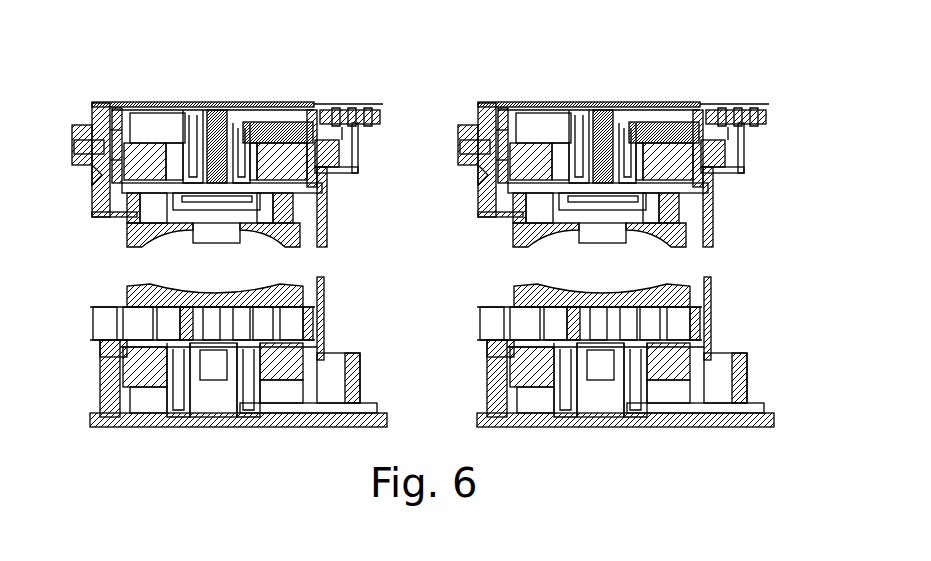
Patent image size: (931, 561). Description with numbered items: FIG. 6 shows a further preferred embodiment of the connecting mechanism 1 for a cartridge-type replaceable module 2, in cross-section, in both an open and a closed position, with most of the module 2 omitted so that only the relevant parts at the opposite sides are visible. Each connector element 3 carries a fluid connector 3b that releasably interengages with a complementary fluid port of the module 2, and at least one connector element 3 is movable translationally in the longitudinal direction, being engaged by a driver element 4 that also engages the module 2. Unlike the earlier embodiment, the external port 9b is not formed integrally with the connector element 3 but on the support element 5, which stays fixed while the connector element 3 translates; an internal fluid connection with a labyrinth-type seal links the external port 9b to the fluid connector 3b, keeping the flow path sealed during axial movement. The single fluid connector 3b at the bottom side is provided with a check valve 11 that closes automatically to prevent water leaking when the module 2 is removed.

The connecting mechanism 1 is at (330, 187).
The module 2 is at (303, 240).
The connector element 3 is at (280, 140).
The fluid connector 3b is at (217, 110).
The driver element 4 is at (123, 187).
The support element 5 is at (260, 115).
The external port 9b is at (365, 117).
The check valve 11 is at (97, 362).